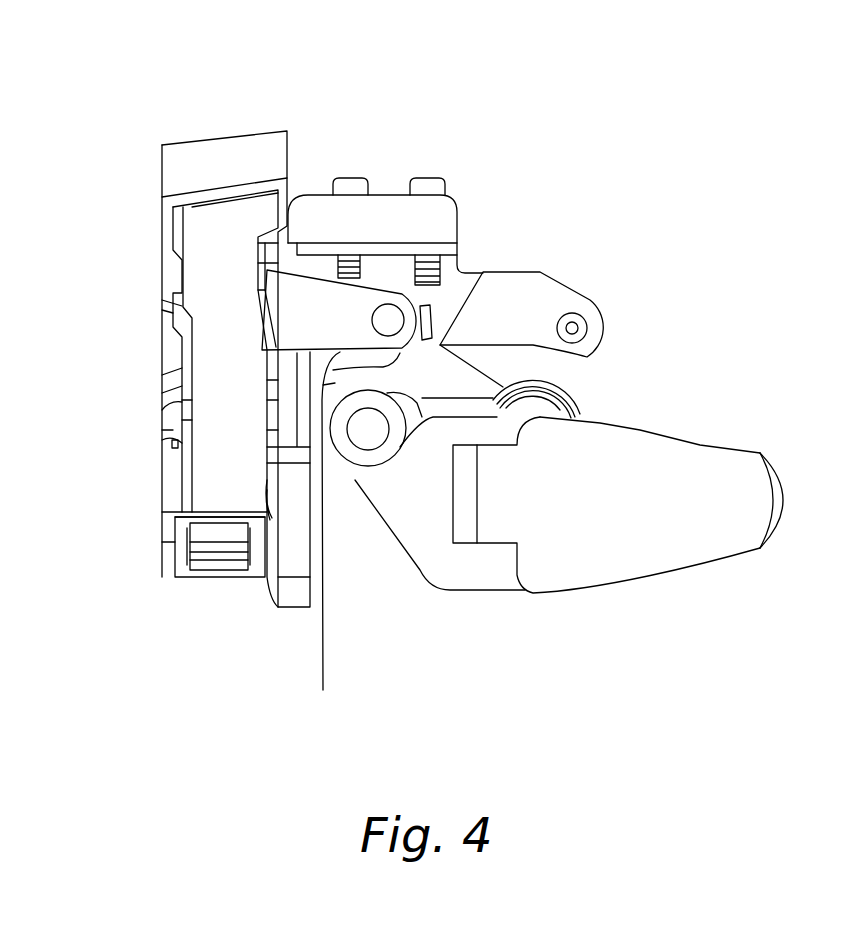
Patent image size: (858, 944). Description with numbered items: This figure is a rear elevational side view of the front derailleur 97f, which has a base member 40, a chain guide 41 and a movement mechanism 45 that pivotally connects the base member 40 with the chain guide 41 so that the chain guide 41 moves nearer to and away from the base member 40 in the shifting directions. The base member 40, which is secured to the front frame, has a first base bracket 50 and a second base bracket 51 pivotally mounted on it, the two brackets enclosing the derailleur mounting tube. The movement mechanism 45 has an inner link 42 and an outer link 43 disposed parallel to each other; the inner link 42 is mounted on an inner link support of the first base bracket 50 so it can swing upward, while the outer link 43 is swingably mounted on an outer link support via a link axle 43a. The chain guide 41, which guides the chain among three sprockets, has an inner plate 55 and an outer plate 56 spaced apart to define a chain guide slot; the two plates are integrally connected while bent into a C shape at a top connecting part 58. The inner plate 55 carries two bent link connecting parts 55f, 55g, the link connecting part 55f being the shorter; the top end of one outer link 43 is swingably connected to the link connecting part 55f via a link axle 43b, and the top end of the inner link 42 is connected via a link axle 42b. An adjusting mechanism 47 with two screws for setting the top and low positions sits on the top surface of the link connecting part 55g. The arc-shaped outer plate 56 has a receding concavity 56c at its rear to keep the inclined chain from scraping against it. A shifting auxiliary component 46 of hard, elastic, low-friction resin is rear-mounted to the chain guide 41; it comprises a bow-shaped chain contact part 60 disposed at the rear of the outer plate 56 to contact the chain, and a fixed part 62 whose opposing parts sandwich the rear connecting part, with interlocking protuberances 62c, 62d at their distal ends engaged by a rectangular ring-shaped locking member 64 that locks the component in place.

The base member 40 is at (500, 625).
The chain guide 41 is at (253, 128).
The inner link 42 is at (568, 377).
The link axle 42b is at (585, 328).
The outer link 43 is at (411, 544).
The link axle 43a is at (365, 438).
The link axle 43b is at (393, 320).
The movement mechanism 45 is at (428, 358).
The shifting auxiliary component 46 is at (197, 580).
The adjusting mechanism 47 is at (398, 178).
The first base bracket 50 is at (470, 583).
The second base bracket 51 is at (653, 566).
The inner plate 55 is at (283, 208).
The link connecting part 55f is at (343, 302).
The link connecting part 55g is at (568, 293).
The outer plate 56 is at (158, 237).
The receding concavity 56c is at (177, 443).
The top connecting part 58 is at (190, 150).
The chain contact part 60 is at (187, 460).
The fixed part 62 is at (217, 573).
The interlocking protuberance 62c is at (205, 530).
The interlocking protuberance 62d is at (198, 560).
The locking member 64 is at (257, 577).
The front derailleur 97f is at (617, 232).